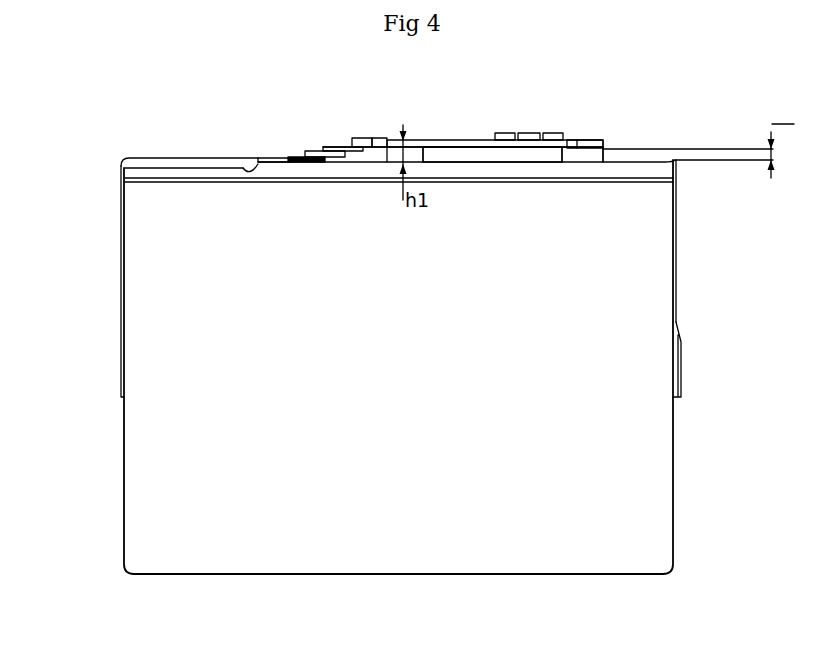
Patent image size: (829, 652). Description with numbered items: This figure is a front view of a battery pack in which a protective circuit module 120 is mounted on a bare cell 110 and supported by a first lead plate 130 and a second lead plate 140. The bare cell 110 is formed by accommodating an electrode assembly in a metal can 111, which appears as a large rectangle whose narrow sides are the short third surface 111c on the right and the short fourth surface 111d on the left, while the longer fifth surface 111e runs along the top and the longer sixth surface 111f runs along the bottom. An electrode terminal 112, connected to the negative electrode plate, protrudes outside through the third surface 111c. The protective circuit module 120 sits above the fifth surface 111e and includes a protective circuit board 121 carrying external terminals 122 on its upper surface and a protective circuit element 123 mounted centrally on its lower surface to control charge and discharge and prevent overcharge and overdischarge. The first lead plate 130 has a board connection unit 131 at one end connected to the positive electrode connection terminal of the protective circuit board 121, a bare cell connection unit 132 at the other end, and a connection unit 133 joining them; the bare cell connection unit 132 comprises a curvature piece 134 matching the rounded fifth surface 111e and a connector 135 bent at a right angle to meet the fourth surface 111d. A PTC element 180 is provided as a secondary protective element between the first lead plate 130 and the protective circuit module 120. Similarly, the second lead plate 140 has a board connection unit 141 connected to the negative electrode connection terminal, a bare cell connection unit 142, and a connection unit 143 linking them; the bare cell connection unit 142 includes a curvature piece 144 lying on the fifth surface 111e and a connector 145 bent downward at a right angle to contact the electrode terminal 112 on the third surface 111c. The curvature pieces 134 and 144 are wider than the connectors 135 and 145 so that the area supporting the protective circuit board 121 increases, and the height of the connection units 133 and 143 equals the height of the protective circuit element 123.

The bare cell 110 is at (402, 394).
The can 111 is at (400, 394).
The third surface 111c is at (673, 545).
The fourth surface 111d is at (122, 540).
The fifth surface 111e is at (185, 184).
The sixth surface 111f is at (323, 578).
The electrode terminal 112 is at (677, 377).
The protective circuit module 120 is at (463, 119).
The protective circuit board 121 is at (412, 142).
The external terminals 122 is at (523, 133).
The protective circuit element 123 is at (472, 153).
The first lead plate 130 is at (135, 248).
The board connection unit 131 is at (270, 158).
The bare cell connection unit 132 is at (135, 270).
The connection unit 133 is at (250, 168).
The curvature piece 134 is at (123, 162).
The connector 135 is at (62, 148).
The second lead plate 140 is at (675, 205).
The board connection unit 141 is at (575, 142).
The bare cell connection unit 142 is at (734, 241).
The connection unit 143 is at (607, 152).
The curvature piece 144 is at (677, 162).
The connector 145 is at (746, 178).
The PTC element 180 is at (316, 150).